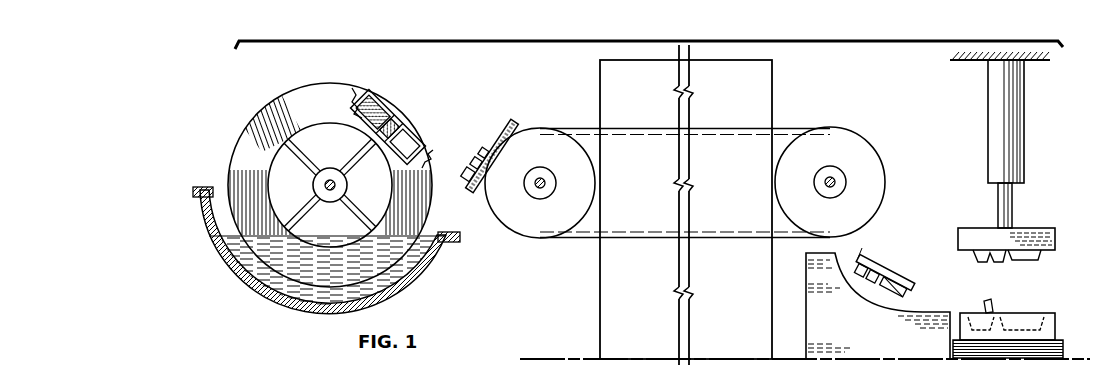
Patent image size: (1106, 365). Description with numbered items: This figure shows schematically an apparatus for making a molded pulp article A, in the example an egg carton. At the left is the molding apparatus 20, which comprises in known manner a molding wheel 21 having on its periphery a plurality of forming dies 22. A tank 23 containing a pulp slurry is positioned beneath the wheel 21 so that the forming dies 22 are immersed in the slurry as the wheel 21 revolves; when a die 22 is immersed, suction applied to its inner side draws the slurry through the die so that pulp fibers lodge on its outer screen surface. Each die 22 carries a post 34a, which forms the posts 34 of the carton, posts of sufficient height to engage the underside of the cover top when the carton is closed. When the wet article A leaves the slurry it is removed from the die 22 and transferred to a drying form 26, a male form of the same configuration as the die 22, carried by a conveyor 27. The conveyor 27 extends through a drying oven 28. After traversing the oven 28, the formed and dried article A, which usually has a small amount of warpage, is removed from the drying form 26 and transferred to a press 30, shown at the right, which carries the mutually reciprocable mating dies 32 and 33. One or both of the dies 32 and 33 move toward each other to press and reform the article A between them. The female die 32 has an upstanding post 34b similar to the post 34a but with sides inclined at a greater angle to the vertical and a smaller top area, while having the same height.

The molding apparatus 20 is at (236, 120).
The molding wheel 21 is at (312, 92).
The forming die 22 is at (401, 137).
The tank 23 is at (407, 285).
The drying form 26 is at (511, 114).
The conveyor 27 is at (565, 128).
The drying oven 28 is at (602, 302).
The press 30 is at (1031, 156).
The female die 32 is at (1050, 325).
The pressing and reforming die 33 is at (1038, 257).
The posts 34 is at (878, 268).
The post of the die 34a is at (380, 113).
The upstanding post 34b is at (993, 309).
The article A is at (903, 270).